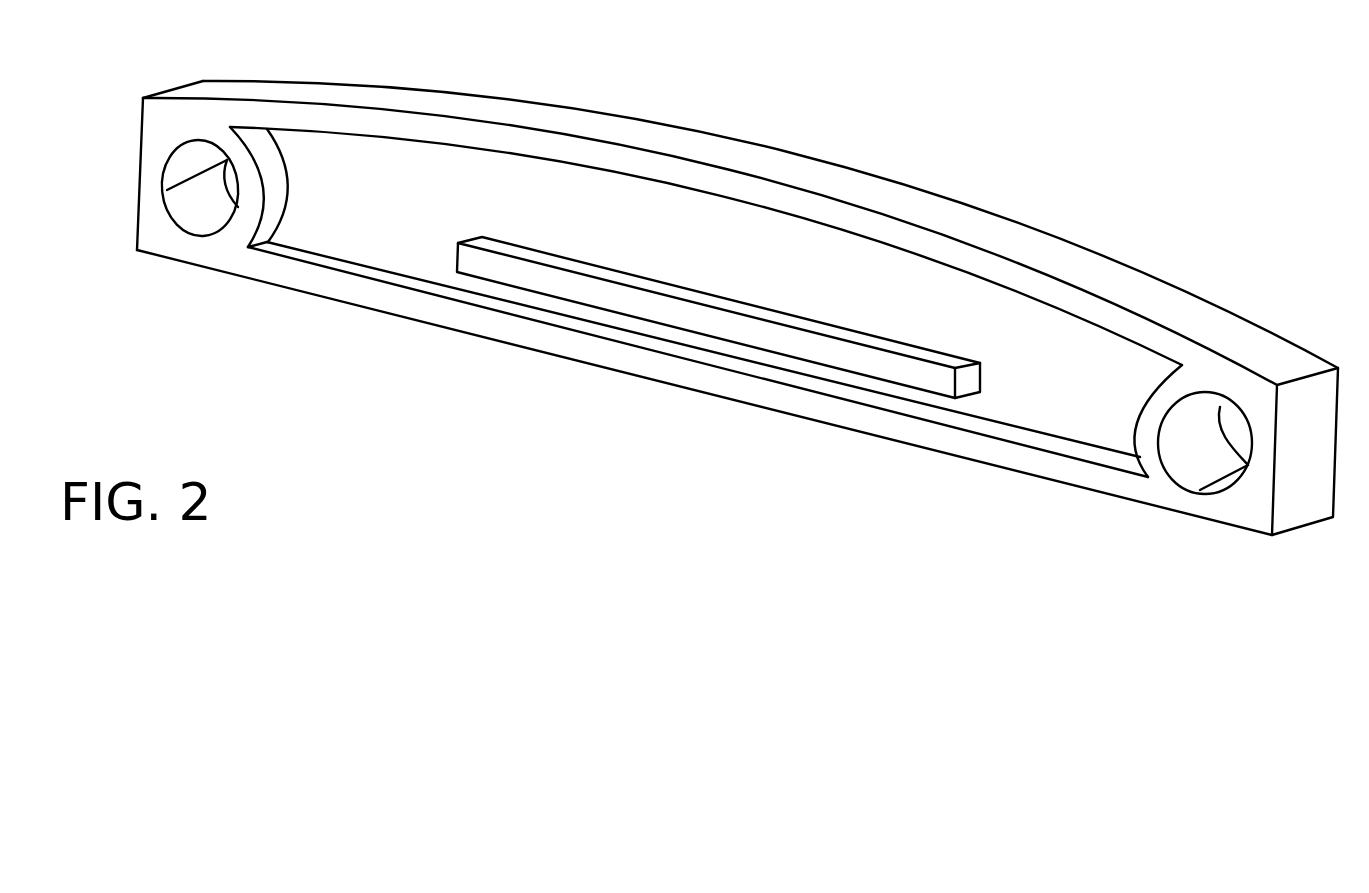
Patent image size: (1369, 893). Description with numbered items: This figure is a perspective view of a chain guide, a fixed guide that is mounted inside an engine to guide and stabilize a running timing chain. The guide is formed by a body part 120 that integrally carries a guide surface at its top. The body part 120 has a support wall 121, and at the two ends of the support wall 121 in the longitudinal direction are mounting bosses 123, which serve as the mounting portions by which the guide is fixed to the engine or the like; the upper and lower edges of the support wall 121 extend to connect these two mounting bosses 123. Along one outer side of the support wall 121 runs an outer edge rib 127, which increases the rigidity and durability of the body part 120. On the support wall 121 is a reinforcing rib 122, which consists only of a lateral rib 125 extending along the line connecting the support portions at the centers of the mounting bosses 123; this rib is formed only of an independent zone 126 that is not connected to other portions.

The body part 120 is at (737, 308).
The support wall 121 is at (706, 293).
The reinforcing rib 122 is at (714, 339).
The mounting boss 123 is at (250, 195).
The lateral rib 125 is at (719, 302).
The independent zone 126 is at (593, 288).
The outer edge rib 127 is at (393, 123).